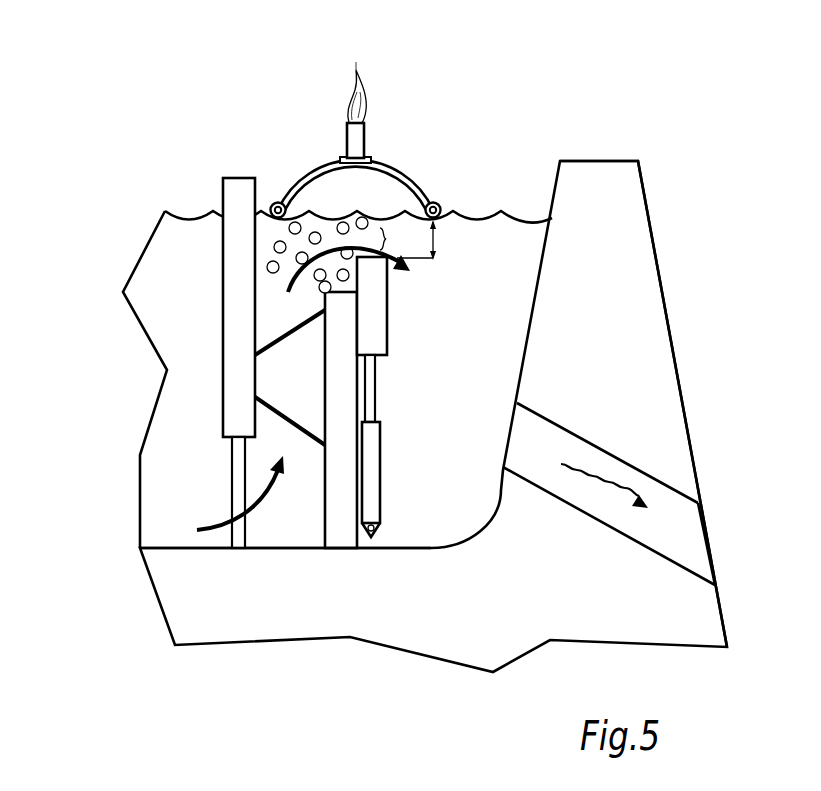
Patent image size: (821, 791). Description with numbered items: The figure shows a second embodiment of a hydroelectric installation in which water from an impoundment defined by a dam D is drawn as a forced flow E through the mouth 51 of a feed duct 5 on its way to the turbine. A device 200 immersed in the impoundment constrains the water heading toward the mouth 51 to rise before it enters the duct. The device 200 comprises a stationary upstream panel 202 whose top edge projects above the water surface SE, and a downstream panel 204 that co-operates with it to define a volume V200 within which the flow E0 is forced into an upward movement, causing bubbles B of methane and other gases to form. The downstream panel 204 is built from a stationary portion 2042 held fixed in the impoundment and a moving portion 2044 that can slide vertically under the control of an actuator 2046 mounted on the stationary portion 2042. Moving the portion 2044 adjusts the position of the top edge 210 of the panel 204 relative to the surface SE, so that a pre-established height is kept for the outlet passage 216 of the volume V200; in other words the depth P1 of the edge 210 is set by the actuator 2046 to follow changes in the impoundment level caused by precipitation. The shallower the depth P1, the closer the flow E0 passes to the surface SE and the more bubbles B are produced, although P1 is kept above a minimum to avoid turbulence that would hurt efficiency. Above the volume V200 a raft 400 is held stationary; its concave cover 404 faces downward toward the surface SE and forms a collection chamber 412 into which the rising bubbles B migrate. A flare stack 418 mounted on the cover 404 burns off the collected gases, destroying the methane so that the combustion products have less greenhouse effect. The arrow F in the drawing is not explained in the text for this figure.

The raft 400 is at (369, 115).
The upstream panel 202 is at (235, 195).
The flare stack 418 is at (356, 141).
The concave cover 404 is at (383, 177).
The collection chamber 412 is at (355, 188).
The outlet passage 216 is at (396, 241).
The top edge 210 is at (353, 270).
The moving portion 2044 is at (376, 286).
The stationary portion 2042 is at (337, 393).
The downstream panel 204 is at (568, 487).
The actuator 2046 is at (373, 493).
The device 200 is at (200, 365).
The mouth 51 is at (583, 489).
The feed duct 5 is at (690, 537).
The bubbles B is at (335, 262).
The dam D is at (633, 190).
The forced flow E is at (605, 486).
The floor F is at (172, 540).
The surface of the water SE is at (183, 212).
The depth P1 is at (427, 240).
The flow E0 is at (308, 389).
The volume V200 is at (304, 386).